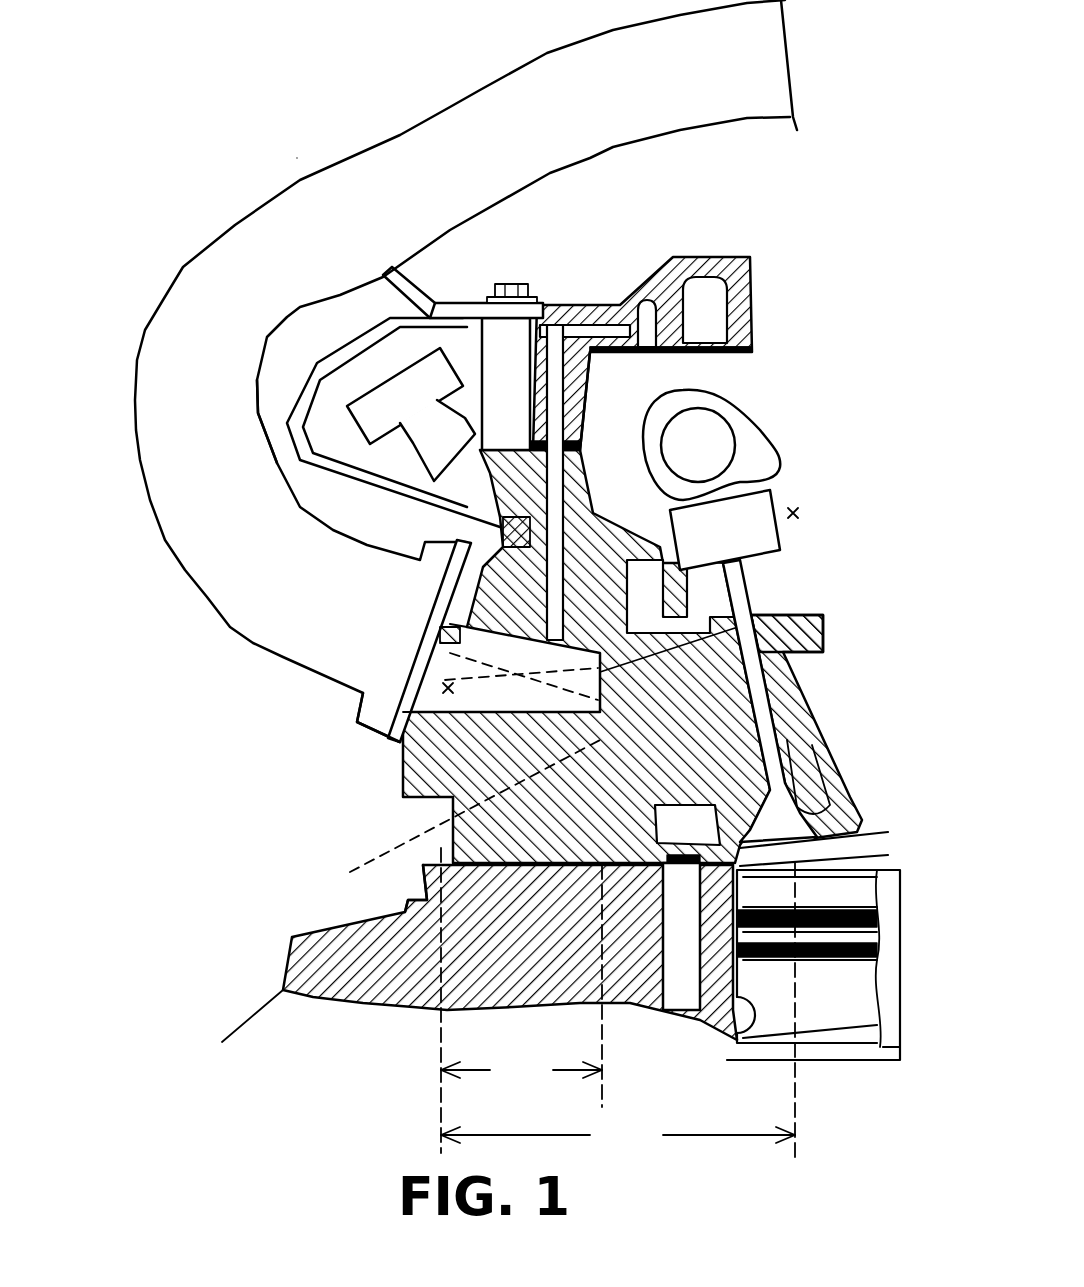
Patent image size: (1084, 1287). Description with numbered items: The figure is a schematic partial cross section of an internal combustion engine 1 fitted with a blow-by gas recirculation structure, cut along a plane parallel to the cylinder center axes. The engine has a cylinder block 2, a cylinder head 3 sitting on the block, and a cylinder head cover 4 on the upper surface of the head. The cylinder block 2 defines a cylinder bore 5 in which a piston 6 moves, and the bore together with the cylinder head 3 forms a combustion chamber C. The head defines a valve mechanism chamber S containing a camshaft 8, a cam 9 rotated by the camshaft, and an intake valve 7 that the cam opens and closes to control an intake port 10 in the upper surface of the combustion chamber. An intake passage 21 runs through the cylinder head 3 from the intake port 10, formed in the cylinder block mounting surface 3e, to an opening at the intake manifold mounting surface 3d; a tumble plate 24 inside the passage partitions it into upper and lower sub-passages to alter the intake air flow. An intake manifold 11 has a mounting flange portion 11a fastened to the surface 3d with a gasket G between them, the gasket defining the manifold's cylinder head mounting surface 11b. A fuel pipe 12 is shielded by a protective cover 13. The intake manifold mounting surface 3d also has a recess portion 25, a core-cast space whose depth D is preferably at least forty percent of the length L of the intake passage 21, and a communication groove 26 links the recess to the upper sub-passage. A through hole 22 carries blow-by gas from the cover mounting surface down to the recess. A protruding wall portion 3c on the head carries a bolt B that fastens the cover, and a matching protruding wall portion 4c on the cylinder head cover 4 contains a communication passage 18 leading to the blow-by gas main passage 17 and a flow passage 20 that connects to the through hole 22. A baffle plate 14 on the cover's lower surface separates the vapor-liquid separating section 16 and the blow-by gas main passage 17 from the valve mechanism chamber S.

The internal combustion engine 1 is at (297, 158).
The cylinder block 2 is at (283, 988).
The cylinder head 3 is at (398, 800).
The protruding wall portion 3c is at (527, 447).
The intake manifold mounting surface 3d is at (415, 712).
The cylinder block mounting surface 3e is at (427, 913).
The cylinder head cover 4 is at (762, 265).
The protruding wall portion 4c is at (586, 410).
The cylinder bore 5 is at (743, 1037).
The piston 6 is at (857, 993).
The intake valve 7 is at (845, 787).
The camshaft 8 is at (720, 440).
The cam 9 is at (770, 463).
The intake port 10 is at (800, 760).
The intake manifold 11 is at (433, 133).
The mounting flange portion 11a is at (367, 713).
The cylinder head mounting surface 11b is at (415, 555).
The fuel pipe 12 is at (360, 420).
The protective cover 13 is at (320, 377).
The baffle plate 14 is at (700, 358).
The vapor-liquid separating section 16 is at (686, 316).
The blow-by gas main passage 17 is at (627, 307).
The communication passage 18 is at (597, 325).
The flow passage 20 is at (557, 357).
The intake passage 21 is at (470, 817).
The through hole 22 is at (745, 560).
The tumble plate 24 is at (793, 607).
The recess portion 25 is at (440, 665).
The communication groove 26 is at (437, 633).
The bolt B is at (510, 293).
The gasket G is at (447, 688).
The valve mechanism chamber S is at (797, 507).
The combustion chamber C is at (860, 840).
The depth D is at (618, 1004).
The length L is at (618, 1136).